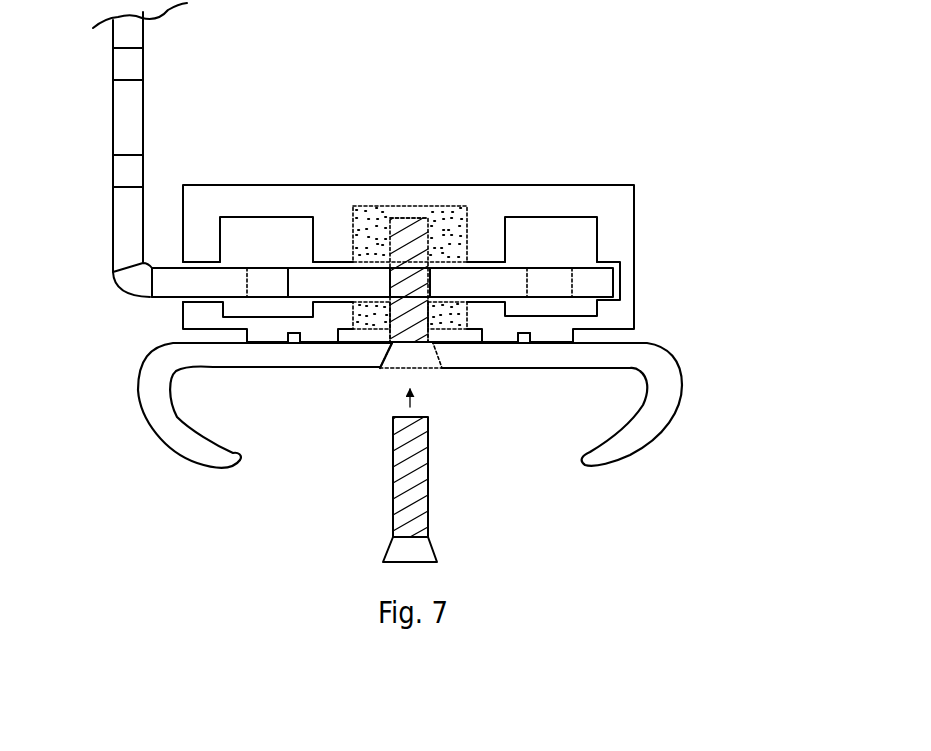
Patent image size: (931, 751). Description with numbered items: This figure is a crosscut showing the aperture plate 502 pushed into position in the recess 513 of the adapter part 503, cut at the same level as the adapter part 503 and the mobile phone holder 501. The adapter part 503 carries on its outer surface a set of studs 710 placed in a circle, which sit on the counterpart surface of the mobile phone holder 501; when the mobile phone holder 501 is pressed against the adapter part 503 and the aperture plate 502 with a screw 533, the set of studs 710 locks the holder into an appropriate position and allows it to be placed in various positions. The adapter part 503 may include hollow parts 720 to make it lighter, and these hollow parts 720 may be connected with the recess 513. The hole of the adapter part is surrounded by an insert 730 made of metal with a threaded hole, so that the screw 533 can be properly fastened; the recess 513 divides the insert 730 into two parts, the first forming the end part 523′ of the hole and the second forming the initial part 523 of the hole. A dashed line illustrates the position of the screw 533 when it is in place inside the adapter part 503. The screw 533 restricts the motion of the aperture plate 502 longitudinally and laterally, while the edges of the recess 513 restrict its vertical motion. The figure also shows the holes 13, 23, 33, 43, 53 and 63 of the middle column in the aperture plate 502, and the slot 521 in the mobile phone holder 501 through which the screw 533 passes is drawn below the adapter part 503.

The aperture plate 502 is at (113, 223).
The hole of the middle column 63 is at (134, 57).
The hole of the middle column 53 is at (124, 168).
The hole of the middle column 43 is at (132, 281).
The adapter part 503 is at (620, 178).
The hollow parts 720 is at (273, 217).
The hole of the middle column 13 is at (554, 266).
The recess of the adapter part 513 is at (234, 277).
The hole of the middle column 33 is at (259, 283).
The insert 730 is at (366, 306).
The hole of the middle column 23 is at (407, 276).
The end part of the adapter part hole 523′ is at (414, 241).
The initial part of the adapter part hole 523 is at (418, 317).
The clip slot 521 is at (414, 358).
The set of studs 710 is at (316, 349).
The mobile phone holder 501 is at (683, 382).
The screw 533 is at (393, 482).